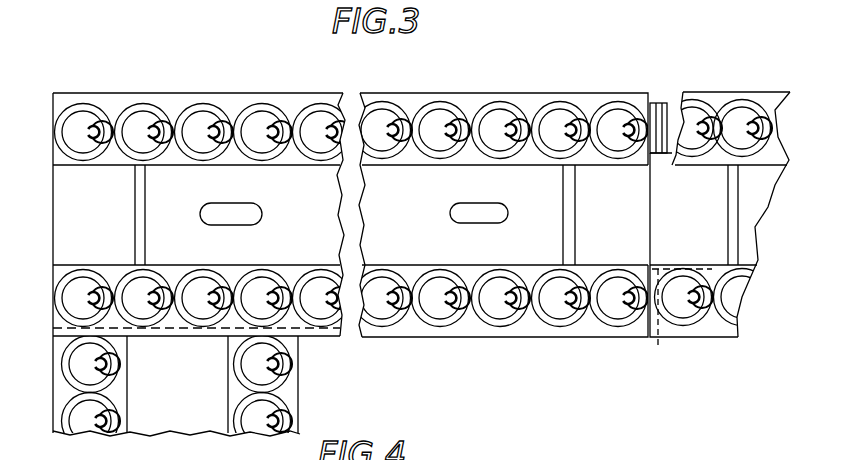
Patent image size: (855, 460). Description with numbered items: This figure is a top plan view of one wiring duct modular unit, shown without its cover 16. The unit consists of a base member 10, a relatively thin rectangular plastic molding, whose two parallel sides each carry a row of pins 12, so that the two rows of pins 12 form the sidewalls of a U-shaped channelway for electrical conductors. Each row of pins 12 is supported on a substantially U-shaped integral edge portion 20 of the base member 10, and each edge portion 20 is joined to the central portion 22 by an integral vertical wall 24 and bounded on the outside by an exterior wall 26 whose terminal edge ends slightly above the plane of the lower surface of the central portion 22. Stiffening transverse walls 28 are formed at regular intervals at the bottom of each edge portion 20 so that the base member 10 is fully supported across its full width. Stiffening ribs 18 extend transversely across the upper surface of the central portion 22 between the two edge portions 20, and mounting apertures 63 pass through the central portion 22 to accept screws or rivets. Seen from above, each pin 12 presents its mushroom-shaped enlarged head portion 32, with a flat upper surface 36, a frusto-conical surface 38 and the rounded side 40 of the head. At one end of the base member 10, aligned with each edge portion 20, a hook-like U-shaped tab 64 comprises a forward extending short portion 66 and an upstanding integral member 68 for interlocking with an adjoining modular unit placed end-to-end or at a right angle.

In FIG. 3, the base member 10 is at (74, 193).
In FIG. 3, the pins 12 is at (74, 101).
In FIG. 3, the stiffening ribs 18 is at (135, 226).
In FIG. 3, the edge portions 20 is at (122, 388).
In FIG. 3, the central portion 22 is at (167, 183).
In FIG. 3, the vertical wall 24 is at (340, 168).
In FIG. 3, the exterior wall 26 is at (333, 338).
In FIG. 3, the flat upper surface 36 is at (572, 118).
In FIG. 4, the flat upper surface 36 is at (534, 459).
In FIG. 3, the frusto-conical surface 38 is at (563, 112).
In FIG. 4, the frusto-conical surface 38 is at (737, 455).
In FIG. 3, the rounded side 40 is at (553, 103).
In FIG. 3, the mounting apertures 63 is at (354, 199).
In FIG. 3, the hook-like tab 64 is at (60, 337).
In FIG. 3, the forward extending short portion 66 is at (655, 103).
In FIG. 3, the upstanding member 68 is at (667, 107).
In FIG. 4, the cover 16 is at (821, 448).
In FIG. 4, the stiffening transverse walls 28 is at (774, 455).
In FIG. 4, the enlarged head portion 32 is at (497, 455).